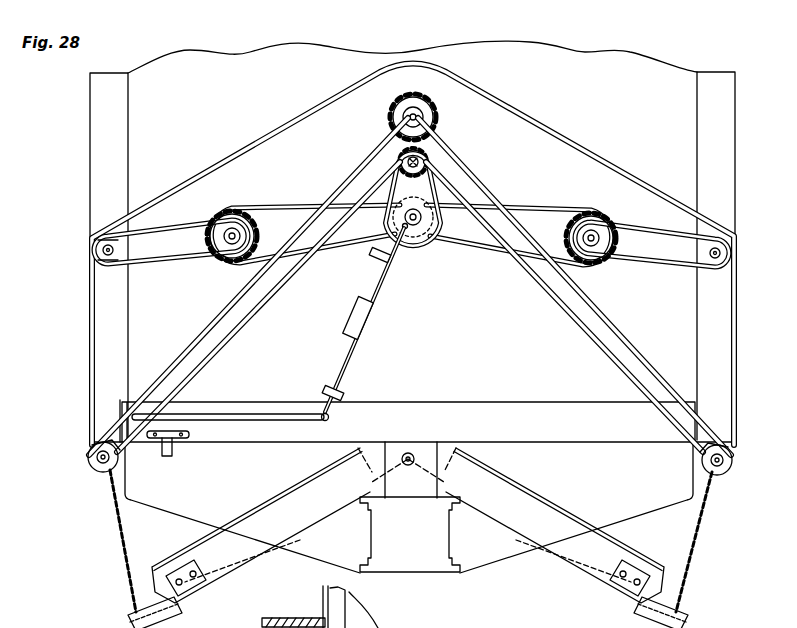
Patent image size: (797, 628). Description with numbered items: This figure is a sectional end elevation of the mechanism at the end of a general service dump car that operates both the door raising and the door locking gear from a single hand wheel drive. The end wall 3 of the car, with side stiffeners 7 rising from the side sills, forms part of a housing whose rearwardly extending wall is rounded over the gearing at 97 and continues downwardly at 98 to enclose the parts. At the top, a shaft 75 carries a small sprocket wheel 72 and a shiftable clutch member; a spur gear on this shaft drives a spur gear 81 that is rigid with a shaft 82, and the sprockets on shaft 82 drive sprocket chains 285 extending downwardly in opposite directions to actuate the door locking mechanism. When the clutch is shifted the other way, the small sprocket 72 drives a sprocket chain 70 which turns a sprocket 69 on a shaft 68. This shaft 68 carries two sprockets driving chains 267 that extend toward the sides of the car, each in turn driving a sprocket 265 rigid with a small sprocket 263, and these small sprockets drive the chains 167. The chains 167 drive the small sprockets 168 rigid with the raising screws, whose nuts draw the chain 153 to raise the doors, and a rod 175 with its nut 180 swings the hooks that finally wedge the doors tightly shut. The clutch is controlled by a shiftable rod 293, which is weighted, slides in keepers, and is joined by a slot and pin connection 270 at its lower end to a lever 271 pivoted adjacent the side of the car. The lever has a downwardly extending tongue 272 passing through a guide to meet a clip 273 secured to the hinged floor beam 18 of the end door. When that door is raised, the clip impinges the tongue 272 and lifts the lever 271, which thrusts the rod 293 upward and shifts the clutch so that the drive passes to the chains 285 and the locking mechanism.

The side stiffener 7 is at (88, 115).
The end wall 3 is at (660, 256).
The floor beam 18 is at (408, 538).
The shaft 68 is at (406, 230).
The sprocket 69 is at (432, 216).
The sprocket chain 70 is at (395, 192).
The small sprocket wheel 72 is at (428, 160).
The shaft 75 is at (400, 161).
The spur gear 81 is at (438, 106).
The shaft 82 is at (400, 117).
The rounded housing wall 97 is at (440, 74).
The downward housing wall portion 98 is at (186, 173).
The chain 153 is at (122, 534).
The chain 167 is at (666, 230).
The sprocket 168 is at (92, 252).
The rod 175 is at (90, 456).
The nut 180 is at (100, 470).
The small sprocket 263 is at (634, 243).
The sprocket 265 is at (220, 208).
The chain 267 is at (283, 205).
The slot and pin connection 270 is at (333, 419).
The lever 271 is at (248, 410).
The tongue 272 is at (166, 455).
The clip 273 is at (200, 594).
The sprocket chain 285 is at (208, 324).
The shiftable rod 293 is at (372, 295).